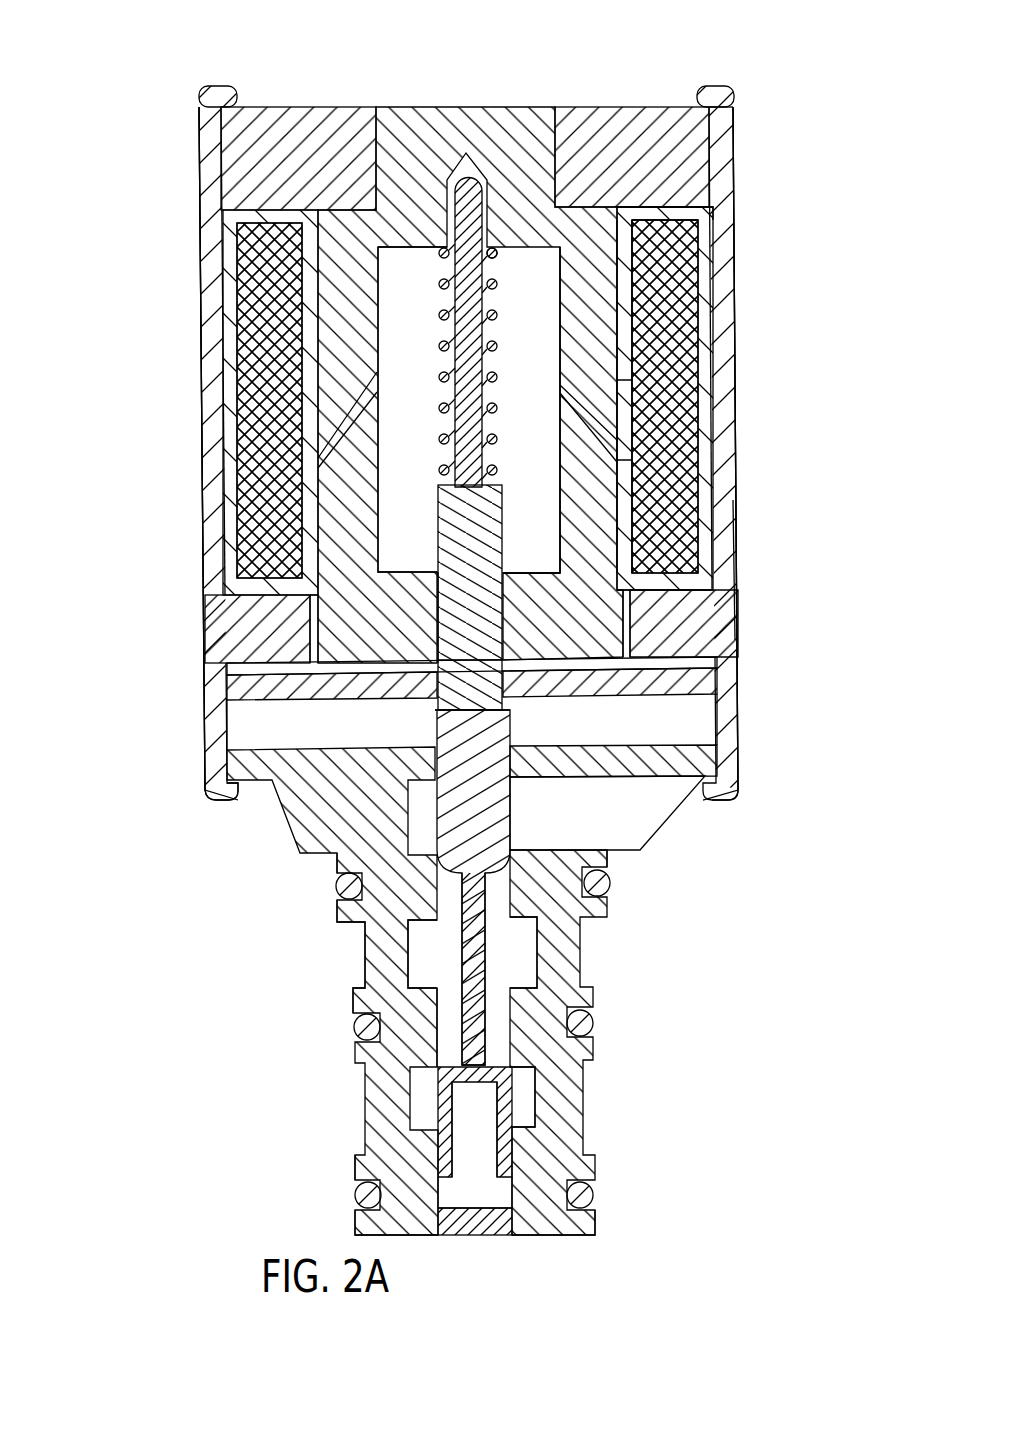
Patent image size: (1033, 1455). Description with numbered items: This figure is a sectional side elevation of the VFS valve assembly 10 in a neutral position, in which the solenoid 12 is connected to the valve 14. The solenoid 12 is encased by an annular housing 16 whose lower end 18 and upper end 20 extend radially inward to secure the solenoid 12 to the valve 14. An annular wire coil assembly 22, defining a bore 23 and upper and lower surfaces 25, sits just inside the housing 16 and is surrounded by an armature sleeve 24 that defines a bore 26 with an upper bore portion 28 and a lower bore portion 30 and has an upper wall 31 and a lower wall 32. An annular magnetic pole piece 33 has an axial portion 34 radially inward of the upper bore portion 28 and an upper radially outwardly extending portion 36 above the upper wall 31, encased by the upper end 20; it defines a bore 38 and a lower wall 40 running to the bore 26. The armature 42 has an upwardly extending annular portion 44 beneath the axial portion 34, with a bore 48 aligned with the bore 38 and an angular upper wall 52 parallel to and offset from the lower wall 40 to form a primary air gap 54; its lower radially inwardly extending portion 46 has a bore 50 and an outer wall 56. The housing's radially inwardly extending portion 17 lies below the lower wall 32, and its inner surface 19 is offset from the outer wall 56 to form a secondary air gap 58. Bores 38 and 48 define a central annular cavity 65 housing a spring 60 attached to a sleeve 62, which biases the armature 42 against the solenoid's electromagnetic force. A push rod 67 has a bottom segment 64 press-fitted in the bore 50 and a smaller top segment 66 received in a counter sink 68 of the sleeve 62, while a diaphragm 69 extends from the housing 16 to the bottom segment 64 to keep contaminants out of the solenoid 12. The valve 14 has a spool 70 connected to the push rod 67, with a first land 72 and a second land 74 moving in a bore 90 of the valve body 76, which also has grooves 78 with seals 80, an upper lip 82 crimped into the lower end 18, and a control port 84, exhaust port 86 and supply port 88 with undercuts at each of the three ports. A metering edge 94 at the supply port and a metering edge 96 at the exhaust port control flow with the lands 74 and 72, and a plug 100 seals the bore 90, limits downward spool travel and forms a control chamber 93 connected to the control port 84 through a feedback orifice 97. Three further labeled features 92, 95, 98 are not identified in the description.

The VFS valve assembly 10 is at (472, 54).
The solenoid 12 is at (165, 408).
The valve 14 is at (275, 1101).
The annular housing 16 is at (728, 569).
The radially inwardly extending portion 17 is at (250, 636).
The lower end 18 is at (732, 790).
The inner surface 19 is at (316, 625).
The upper end 20 is at (710, 96).
The annular wire coil assembly 22 is at (683, 344).
The bore 23 is at (565, 366).
The armature sleeve 24 is at (500, 402).
The upper and lower surfaces 25 is at (705, 212).
The bore 26 is at (625, 368).
The upper bore portion 28 is at (650, 243).
The lower bore portion 30 is at (690, 398).
The upper wall 31 is at (640, 206).
The lower wall 32 is at (640, 630).
The annular magnetic pole piece 33 is at (576, 102).
The axial portion 34 is at (612, 322).
The upper radially outwardly extending portion 36 is at (712, 162).
The bore 38 is at (556, 358).
The lower wall 40 is at (470, 385).
The armature 42 is at (545, 640).
The upwardly extending annular portion 44 is at (603, 528).
The lower radially inwardly extending portion 46 is at (585, 655).
The bore 48 is at (558, 490).
The bore 50 is at (488, 585).
The angular upper wall 52 is at (590, 450).
The primary air gap 54 is at (608, 422).
The outer wall 56 is at (625, 612).
The secondary air gap 58 is at (328, 628).
The spring 60 is at (496, 283).
The sleeve 62 is at (430, 107).
The bottom segment of push rod 64 is at (438, 706).
The annular cavity 65 is at (390, 476).
The top segment 66 is at (445, 325).
The push rod 67 is at (432, 556).
The counter sink 68 is at (478, 172).
The diaphragm 69 is at (700, 700).
The spool 70 is at (495, 968).
The first land 72 is at (536, 887).
The second land 74 is at (470, 1092).
The valve body 76 is at (358, 960).
The grooves 78 is at (363, 1006).
The seals 80 is at (358, 1024).
The upper lip 82 is at (252, 783).
The control port 84 is at (540, 957).
The exhaust port 86 is at (650, 822).
The supply port 88 is at (530, 1108).
The bore 90 is at (418, 964).
The valve body lower portion 92 is at (540, 1192).
The control chamber 93 is at (472, 1190).
The metering edge 94 is at (580, 1053).
The end cap 95 is at (503, 1236).
The metering edge 96 is at (580, 918).
The feedback orifice 97 is at (515, 1088).
The clearance gap 98 is at (445, 1044).
The plug 100 is at (490, 1236).